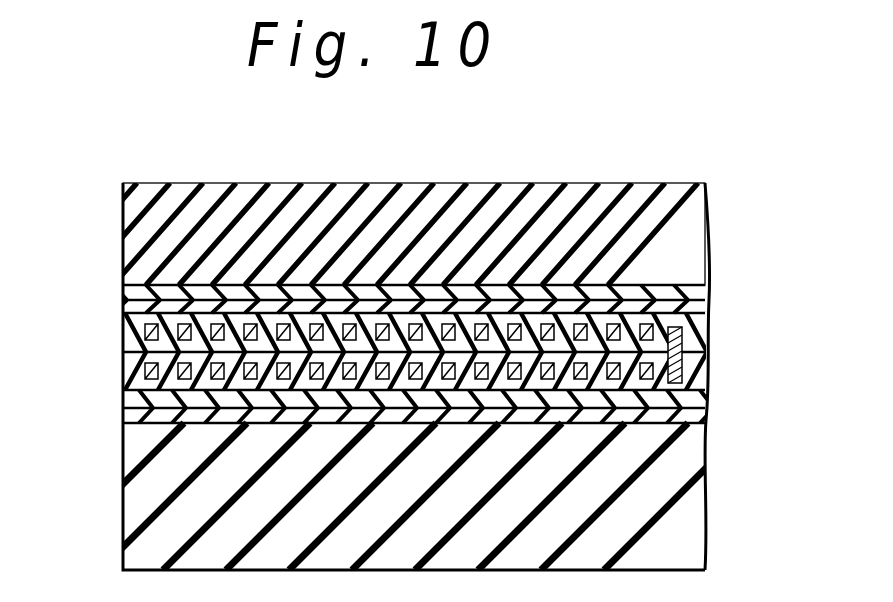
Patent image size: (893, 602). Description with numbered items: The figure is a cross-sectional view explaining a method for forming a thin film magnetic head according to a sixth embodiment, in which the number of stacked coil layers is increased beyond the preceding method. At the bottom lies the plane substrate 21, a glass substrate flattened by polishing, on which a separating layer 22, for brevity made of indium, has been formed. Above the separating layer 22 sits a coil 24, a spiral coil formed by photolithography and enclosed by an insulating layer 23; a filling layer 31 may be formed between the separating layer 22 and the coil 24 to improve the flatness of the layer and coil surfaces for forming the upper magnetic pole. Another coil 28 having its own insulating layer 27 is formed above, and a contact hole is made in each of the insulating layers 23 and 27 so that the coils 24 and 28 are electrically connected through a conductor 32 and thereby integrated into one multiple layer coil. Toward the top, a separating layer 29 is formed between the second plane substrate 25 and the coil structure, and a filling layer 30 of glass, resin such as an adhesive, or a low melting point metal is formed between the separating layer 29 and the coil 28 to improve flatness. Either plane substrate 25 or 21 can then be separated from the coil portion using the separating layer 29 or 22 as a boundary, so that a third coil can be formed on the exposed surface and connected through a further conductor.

The plane substrate 21 is at (683, 510).
The separating layer 22 is at (709, 416).
The insulating layer 23 is at (379, 266).
The coil 24 is at (362, 355).
The second plane substrate 25 is at (690, 225).
The insulating layer 27 is at (379, 244).
The coil 28 is at (257, 320).
The separating layer 29 is at (130, 290).
The filling layer 30 is at (700, 301).
The filling layer 31 is at (702, 399).
The conductor 32 is at (683, 332).